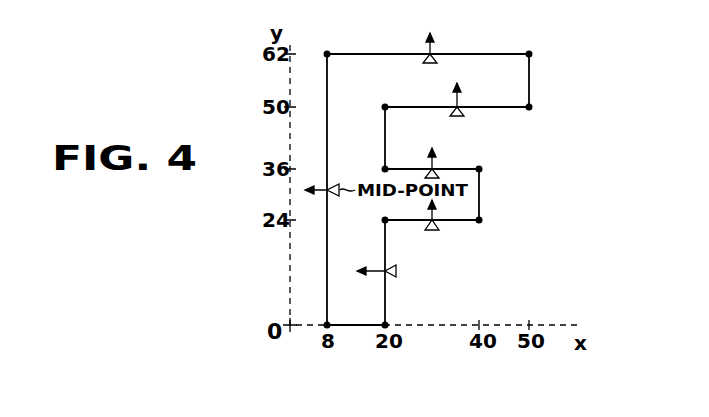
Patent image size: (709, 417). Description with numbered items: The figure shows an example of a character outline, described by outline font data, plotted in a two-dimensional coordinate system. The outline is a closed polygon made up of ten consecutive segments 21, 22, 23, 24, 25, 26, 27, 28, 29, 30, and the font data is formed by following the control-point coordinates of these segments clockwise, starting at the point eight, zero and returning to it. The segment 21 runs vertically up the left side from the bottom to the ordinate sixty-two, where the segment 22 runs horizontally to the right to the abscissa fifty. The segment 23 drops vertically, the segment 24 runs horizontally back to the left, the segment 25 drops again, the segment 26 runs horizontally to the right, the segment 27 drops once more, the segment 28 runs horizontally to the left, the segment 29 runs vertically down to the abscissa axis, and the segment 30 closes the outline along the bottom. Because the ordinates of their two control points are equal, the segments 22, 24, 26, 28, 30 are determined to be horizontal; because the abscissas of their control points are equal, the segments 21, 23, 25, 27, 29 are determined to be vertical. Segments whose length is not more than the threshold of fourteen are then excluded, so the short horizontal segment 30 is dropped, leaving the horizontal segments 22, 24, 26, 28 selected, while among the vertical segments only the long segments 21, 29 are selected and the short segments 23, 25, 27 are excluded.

The segment 21 is at (329, 80).
The segment 22 is at (487, 54).
The segment 23 is at (531, 75).
The segment 24 is at (425, 94).
The segment 25 is at (387, 128).
The segment 26 is at (465, 169).
The segment 27 is at (481, 185).
The segment 28 is at (462, 221).
The segment 29 is at (387, 293).
The segment 30 is at (358, 324).